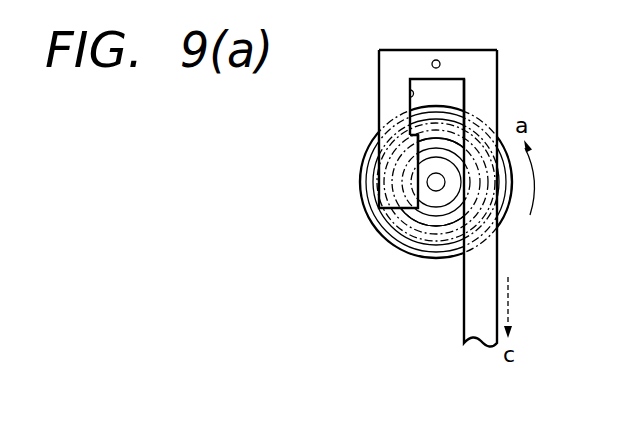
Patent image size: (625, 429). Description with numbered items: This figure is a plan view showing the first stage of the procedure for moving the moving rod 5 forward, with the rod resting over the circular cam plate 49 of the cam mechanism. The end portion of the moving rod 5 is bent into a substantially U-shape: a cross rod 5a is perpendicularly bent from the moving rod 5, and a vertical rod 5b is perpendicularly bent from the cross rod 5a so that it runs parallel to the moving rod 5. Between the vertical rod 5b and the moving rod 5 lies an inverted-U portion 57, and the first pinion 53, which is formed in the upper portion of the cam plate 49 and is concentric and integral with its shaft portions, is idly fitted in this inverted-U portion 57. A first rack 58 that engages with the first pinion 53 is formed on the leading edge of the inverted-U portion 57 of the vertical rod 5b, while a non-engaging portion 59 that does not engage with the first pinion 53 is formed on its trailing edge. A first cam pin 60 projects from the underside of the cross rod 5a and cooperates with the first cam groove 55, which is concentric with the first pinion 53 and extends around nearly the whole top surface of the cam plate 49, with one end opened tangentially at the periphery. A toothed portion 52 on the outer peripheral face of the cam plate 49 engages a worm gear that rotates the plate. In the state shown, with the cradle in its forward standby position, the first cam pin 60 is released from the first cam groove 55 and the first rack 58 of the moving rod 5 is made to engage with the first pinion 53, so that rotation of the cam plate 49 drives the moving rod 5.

The moving rod 5 is at (473, 323).
The cross rod 5a is at (412, 55).
The vertical rod 5b is at (385, 105).
The circular cam plate 49 is at (395, 222).
The toothed portion 52 is at (360, 195).
The first pinion 53 is at (423, 212).
The first cam groove 55 is at (437, 226).
The inverted-U portion 57 is at (445, 87).
The first rack 58 is at (413, 143).
The non-engaging portion 59 is at (410, 89).
The first cam pin 60 is at (439, 61).